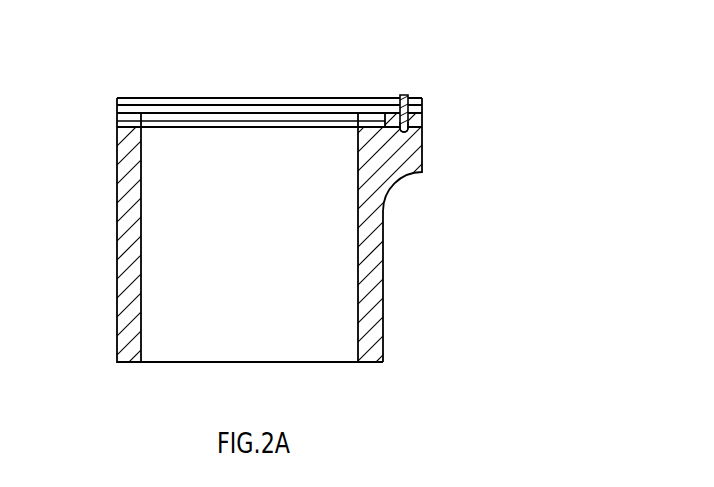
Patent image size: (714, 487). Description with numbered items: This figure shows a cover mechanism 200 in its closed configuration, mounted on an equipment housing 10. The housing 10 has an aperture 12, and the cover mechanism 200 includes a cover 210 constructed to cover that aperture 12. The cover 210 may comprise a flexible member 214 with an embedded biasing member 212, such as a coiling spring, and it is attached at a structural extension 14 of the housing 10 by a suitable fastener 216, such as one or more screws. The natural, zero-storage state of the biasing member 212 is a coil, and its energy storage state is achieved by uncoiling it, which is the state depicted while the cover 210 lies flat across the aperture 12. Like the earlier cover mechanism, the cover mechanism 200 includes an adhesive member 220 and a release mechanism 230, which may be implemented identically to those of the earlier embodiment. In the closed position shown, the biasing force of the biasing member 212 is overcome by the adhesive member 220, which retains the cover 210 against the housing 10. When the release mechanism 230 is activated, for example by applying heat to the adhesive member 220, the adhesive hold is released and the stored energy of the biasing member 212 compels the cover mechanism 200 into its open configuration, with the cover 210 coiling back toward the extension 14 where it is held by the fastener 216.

The cover mechanism 200 is at (352, 211).
The cover 210 is at (245, 104).
The biasing member 212 is at (376, 98).
The flexible member 214 is at (411, 105).
The fastener 216 is at (409, 129).
The adhesive member 220 is at (117, 114).
The release mechanism 230 is at (117, 123).
The equipment housing 10 is at (117, 275).
The aperture 12 is at (358, 130).
The structural extension 14 is at (409, 176).